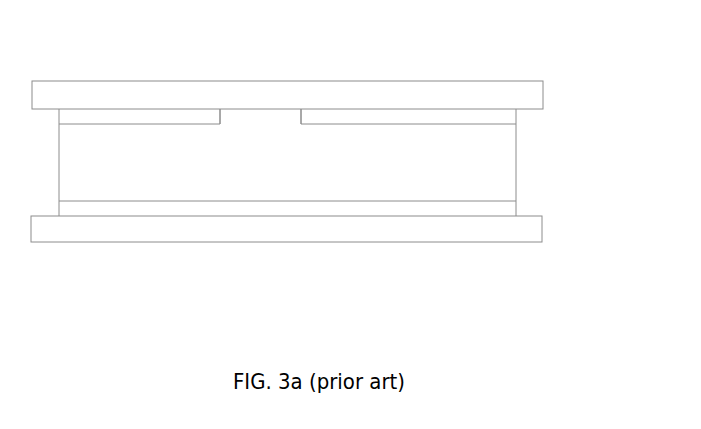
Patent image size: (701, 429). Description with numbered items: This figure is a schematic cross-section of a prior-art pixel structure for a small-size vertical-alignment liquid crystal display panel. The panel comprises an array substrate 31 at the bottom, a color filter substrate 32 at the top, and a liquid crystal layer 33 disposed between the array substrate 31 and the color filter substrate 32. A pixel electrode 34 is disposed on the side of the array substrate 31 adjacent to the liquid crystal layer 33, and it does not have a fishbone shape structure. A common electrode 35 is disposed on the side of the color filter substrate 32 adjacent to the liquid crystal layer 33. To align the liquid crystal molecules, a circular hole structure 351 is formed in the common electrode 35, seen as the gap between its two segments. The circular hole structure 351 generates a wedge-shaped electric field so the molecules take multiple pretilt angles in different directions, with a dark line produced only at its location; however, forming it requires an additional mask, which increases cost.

The array substrate 31 is at (527, 226).
The color filter substrate 32 is at (489, 93).
The liquid crystal layer 33 is at (500, 172).
The pixel electrode 34 is at (366, 205).
The common electrode 35 is at (350, 118).
The circular hole structure 351 is at (247, 122).